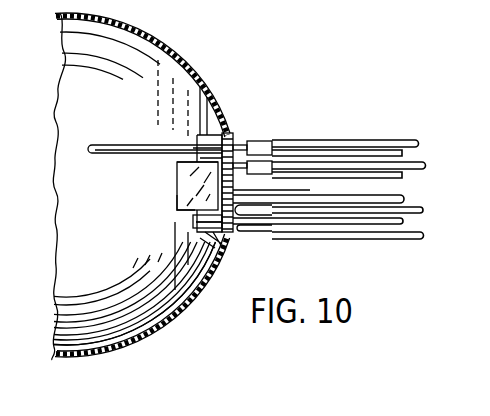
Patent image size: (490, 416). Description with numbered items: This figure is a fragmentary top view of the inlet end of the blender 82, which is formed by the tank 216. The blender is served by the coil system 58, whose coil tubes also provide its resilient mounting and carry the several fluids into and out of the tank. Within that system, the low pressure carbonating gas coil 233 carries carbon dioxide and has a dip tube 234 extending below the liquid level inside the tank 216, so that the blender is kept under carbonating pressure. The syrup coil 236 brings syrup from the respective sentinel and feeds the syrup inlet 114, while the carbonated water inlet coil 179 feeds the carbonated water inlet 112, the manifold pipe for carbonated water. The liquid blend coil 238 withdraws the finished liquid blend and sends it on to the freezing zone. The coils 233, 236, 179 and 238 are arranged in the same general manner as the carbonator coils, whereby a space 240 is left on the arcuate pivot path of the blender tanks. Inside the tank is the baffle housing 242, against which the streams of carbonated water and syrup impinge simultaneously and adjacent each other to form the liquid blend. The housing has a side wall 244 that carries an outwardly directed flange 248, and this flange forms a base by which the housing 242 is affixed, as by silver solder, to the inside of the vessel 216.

The tank 216 is at (175, 72).
The dip tube 234 is at (90, 145).
The outwardly directed flange 248 is at (177, 164).
The side wall 244 is at (189, 177).
The housing 242 is at (173, 205).
The blender 82 is at (145, 338).
The syrup coil 236 is at (423, 167).
The syrup inlet 114 is at (243, 148).
The coil system 58 is at (311, 141).
The space 240 is at (335, 193).
The low pressure carbonating gas coil 233 is at (409, 138).
The carbonated water inlet coil 179 is at (388, 204).
The liquid blend coil 238 is at (393, 238).
The carbonated water inlet 112 is at (261, 203).